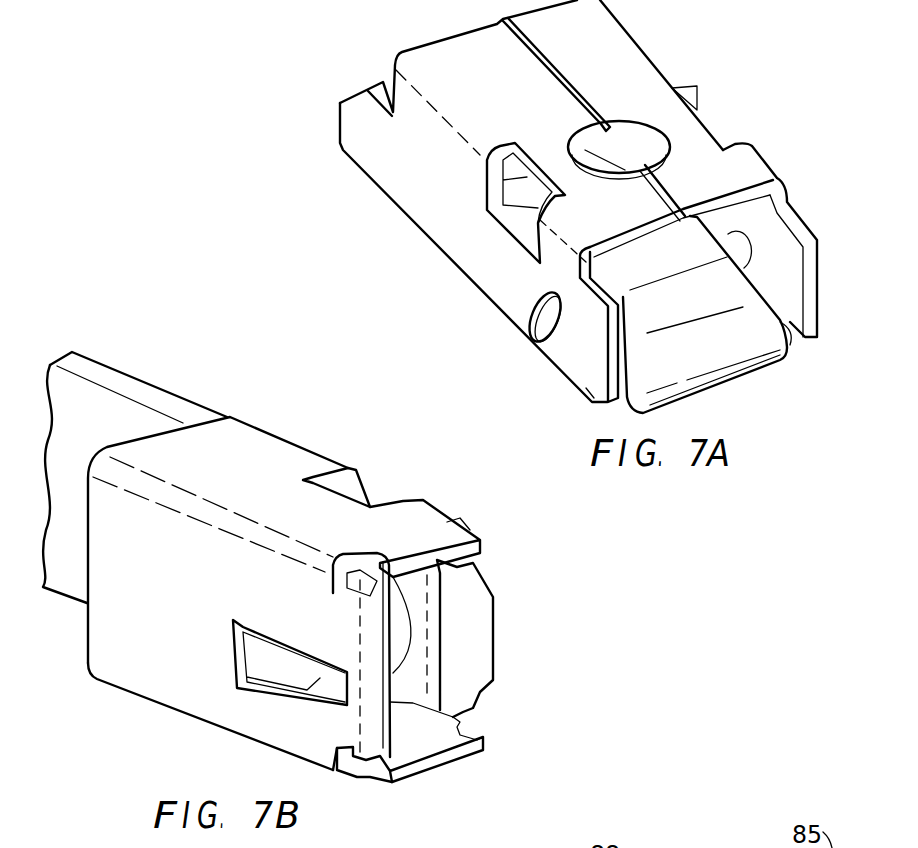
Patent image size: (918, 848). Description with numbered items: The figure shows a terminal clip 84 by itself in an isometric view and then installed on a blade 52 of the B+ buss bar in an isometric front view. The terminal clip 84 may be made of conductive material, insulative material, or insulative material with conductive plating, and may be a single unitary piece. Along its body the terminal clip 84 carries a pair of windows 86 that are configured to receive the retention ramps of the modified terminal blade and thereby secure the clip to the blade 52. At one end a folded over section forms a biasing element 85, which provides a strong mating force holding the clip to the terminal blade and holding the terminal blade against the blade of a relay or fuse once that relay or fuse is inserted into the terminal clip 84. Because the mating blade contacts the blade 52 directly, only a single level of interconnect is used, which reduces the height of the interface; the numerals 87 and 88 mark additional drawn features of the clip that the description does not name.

In FIG. 7A, the terminal clip 84 is at (398, 234).
In FIG. 7B, the terminal clip 84 is at (137, 712).
In FIG. 7A, the biasing element 85 is at (730, 360).
In FIG. 7B, the biasing element 85 is at (373, 722).
In FIG. 7A, the window 86 is at (717, 141).
In FIG. 7B, the window 86 is at (402, 497).
In FIG. 7A, the hole 87 is at (640, 147).
In FIG. 7B, the tab 88 is at (353, 487).
In FIG. 7B, the blade 52 is at (470, 623).